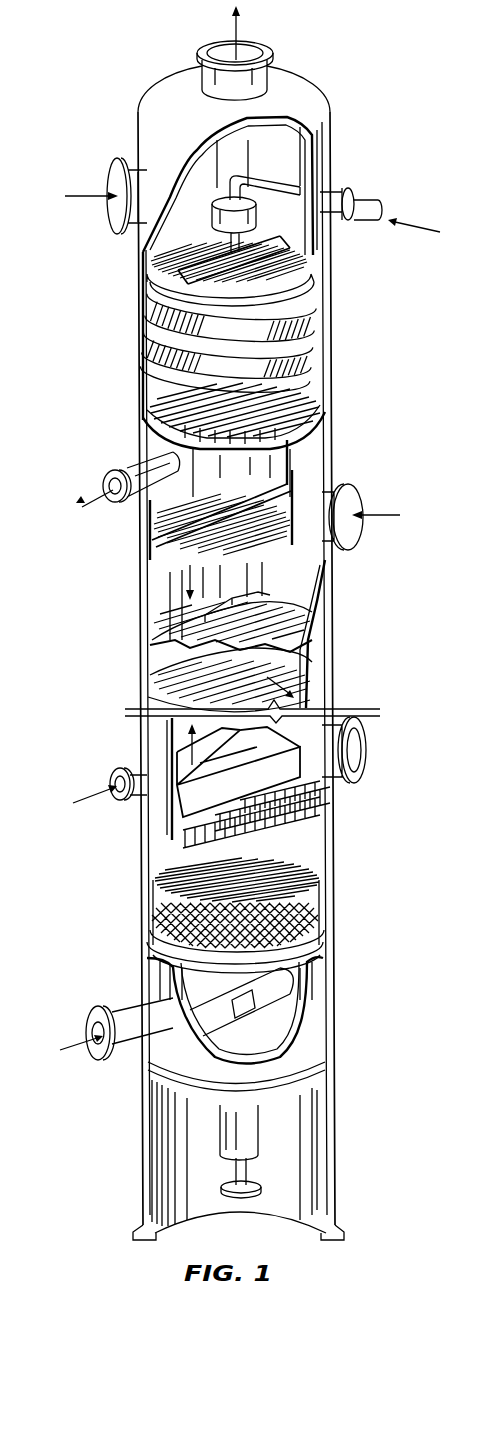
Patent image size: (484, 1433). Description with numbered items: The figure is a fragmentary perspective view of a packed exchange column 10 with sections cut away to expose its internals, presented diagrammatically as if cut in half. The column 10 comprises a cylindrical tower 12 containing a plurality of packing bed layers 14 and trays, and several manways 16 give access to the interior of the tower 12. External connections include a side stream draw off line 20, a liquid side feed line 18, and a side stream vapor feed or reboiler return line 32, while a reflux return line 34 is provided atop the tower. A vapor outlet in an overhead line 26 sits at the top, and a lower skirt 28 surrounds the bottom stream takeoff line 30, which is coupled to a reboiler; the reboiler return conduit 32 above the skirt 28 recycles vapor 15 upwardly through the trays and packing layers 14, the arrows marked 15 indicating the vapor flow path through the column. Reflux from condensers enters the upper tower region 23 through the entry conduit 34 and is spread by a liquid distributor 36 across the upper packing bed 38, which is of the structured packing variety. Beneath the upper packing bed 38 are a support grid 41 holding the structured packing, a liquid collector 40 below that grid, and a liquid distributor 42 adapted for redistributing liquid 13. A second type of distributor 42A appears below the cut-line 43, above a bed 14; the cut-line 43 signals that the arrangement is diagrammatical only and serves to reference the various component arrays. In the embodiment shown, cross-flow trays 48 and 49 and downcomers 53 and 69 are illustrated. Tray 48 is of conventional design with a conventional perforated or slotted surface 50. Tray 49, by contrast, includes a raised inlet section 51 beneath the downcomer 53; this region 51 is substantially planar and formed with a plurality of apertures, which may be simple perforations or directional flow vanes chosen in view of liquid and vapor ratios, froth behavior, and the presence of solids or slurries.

The exchange column 10 is at (368, 106).
The cylindrical tower 12 is at (323, 177).
The liquid 13 is at (427, 220).
The packing bed layers 14 is at (318, 310).
The gas flow 15 is at (240, 32).
The manways 16 is at (113, 177).
The liquid side feed line 18 is at (143, 800).
The side stream draw off line 20 is at (138, 465).
The upper tower region 23 is at (150, 331).
The overhead line 26 is at (272, 58).
The lower skirt 28 is at (307, 1162).
The bottom stream takeoff line 30 is at (240, 1133).
The reboiler return line 32 is at (125, 1050).
The reflux return line 34 is at (340, 192).
The liquid distributor 36 is at (160, 272).
The upper packing bed 38 is at (160, 305).
The liquid collector 40 is at (317, 398).
The support grid 41 is at (320, 352).
The liquid distributor 42 is at (147, 536).
The second type of distributor 42A is at (323, 815).
The cut-line 43 is at (358, 708).
The cross-flow tray 48 is at (267, 615).
The cross-flow tray 49 is at (157, 692).
The perforated surface 50 is at (308, 617).
The raised inlet section 51 is at (152, 670).
The downcomer 53 is at (145, 647).
The downcomer 69 is at (312, 700).